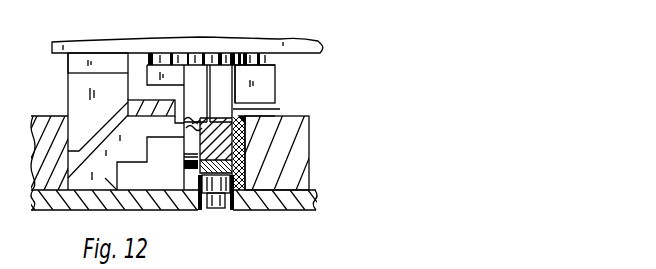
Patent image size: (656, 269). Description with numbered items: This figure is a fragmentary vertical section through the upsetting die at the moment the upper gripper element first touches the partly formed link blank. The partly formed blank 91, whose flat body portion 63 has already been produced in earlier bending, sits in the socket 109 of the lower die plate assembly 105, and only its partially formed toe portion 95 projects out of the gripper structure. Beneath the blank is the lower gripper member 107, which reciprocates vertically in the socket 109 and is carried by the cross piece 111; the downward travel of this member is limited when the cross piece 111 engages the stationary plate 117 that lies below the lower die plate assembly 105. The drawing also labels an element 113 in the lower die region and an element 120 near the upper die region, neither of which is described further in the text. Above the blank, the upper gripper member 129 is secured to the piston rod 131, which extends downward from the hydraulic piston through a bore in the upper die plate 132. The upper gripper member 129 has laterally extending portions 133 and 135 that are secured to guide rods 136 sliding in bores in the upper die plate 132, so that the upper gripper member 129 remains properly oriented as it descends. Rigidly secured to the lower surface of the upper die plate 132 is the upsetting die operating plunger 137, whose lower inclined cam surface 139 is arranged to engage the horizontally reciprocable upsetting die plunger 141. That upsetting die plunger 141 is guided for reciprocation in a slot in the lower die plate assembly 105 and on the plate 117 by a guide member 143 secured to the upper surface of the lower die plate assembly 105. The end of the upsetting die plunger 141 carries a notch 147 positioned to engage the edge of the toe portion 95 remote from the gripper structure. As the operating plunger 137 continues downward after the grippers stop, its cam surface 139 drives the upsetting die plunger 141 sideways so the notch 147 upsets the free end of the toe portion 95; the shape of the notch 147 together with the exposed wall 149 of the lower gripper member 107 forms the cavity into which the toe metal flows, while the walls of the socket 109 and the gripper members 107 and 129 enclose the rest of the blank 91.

The body portion 63 is at (243, 150).
The partly formed blank 91 is at (216, 117).
The toe portion 95 is at (190, 117).
The lower die plate assembly 105 is at (302, 157).
The lower gripper member 107 is at (190, 152).
The socket 109 is at (236, 113).
The cross piece 111 is at (198, 172).
The piston 113 is at (232, 208).
The plate 117 is at (279, 192).
The top surface 120 is at (258, 116).
The upper gripper member 129 is at (232, 74).
The piston rod 131 is at (211, 66).
The upper die plate 132 is at (270, 38).
The laterally extending portion 133 is at (263, 88).
The laterally extending portion 135 is at (165, 78).
The guide rods 136 is at (152, 54).
The upsetting die operating plunger 137 is at (82, 80).
The inclined cam surface 139 is at (107, 126).
The upsetting die plunger 141 is at (143, 208).
The guide member 143 is at (131, 102).
The notch 147 is at (188, 137).
The exposed wall 149 is at (232, 141).